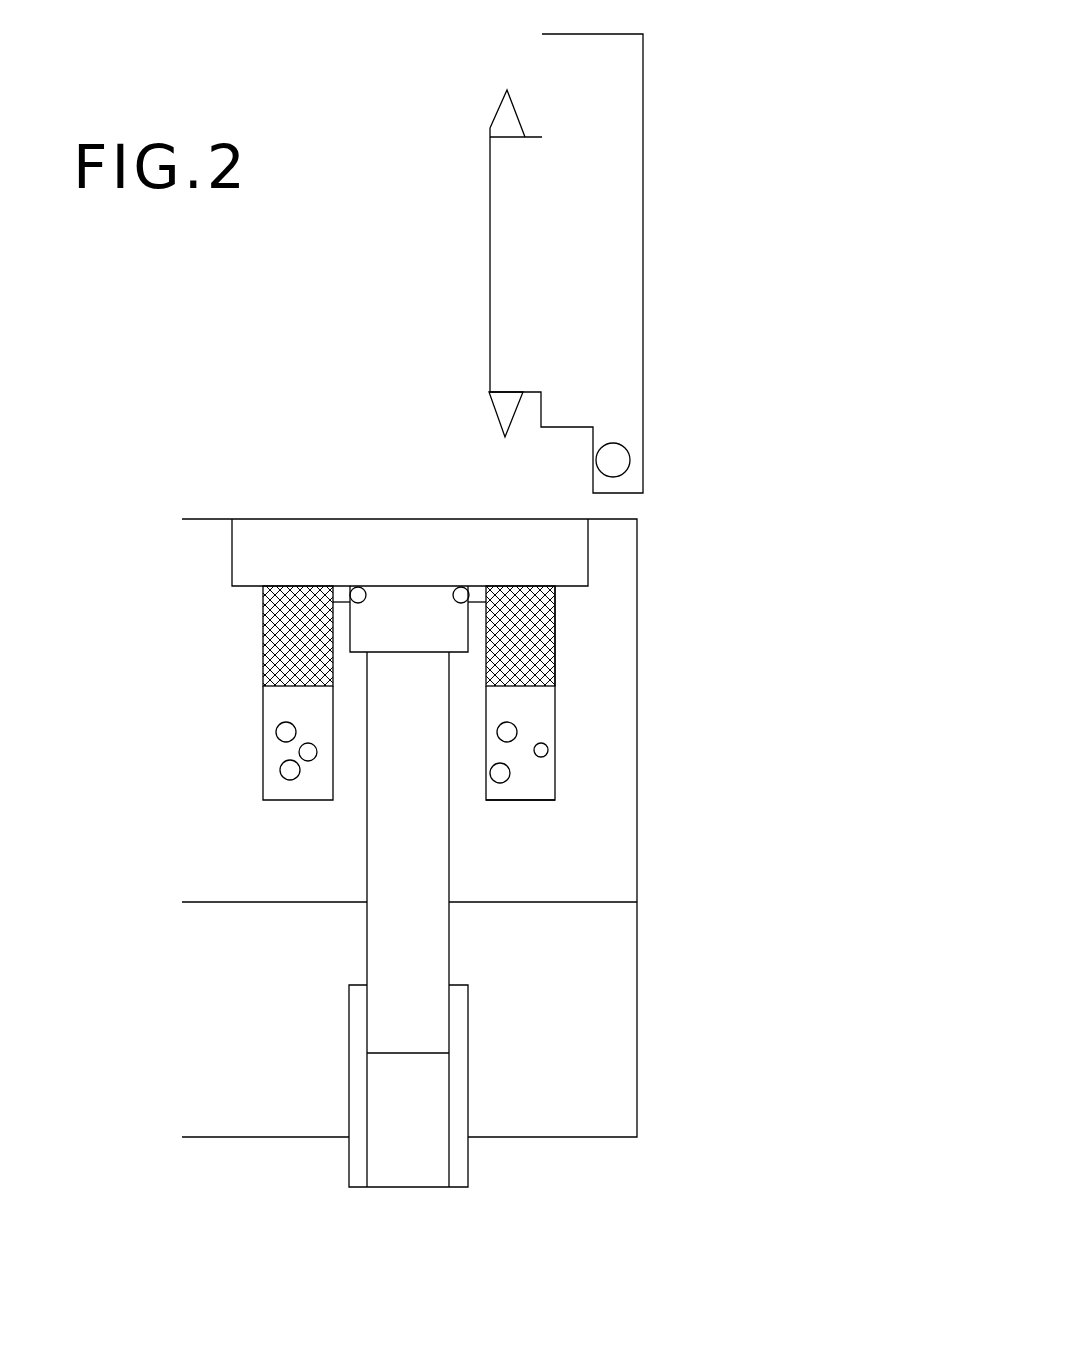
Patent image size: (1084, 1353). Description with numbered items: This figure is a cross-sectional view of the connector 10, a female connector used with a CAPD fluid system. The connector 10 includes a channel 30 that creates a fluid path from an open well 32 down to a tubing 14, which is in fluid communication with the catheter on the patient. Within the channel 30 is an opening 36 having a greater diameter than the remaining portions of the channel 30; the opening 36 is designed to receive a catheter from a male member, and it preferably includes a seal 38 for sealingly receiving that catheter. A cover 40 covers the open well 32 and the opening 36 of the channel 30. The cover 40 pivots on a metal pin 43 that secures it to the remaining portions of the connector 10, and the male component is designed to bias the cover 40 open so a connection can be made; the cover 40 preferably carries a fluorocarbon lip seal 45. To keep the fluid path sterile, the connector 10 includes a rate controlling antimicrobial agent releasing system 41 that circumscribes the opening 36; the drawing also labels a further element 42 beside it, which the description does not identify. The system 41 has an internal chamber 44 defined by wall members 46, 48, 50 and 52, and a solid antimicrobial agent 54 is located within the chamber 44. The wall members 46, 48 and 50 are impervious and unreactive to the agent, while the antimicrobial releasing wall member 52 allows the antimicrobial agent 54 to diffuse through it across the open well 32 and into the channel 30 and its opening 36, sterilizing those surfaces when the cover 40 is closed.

The connector 10 is at (652, 685).
The tubing 14 is at (468, 1163).
The channel 30 is at (418, 933).
The open well 32 is at (503, 538).
The opening 36 is at (370, 620).
The seal 38 is at (355, 587).
The cover 40 is at (650, 270).
The rate controlling antimicrobial agent releasing system 41 is at (527, 642).
The pin 42 is at (487, 585).
The metal pin 43 is at (627, 448).
The internal chamber 44 is at (523, 773).
The fluorocarbon lip seal 45 is at (503, 117).
The wall member 46 is at (485, 746).
The wall member 48 is at (515, 802).
The wall member 50 is at (556, 770).
The antimicrobial releasing wall member 52 is at (557, 613).
The solid antimicrobial agent 54 is at (549, 748).